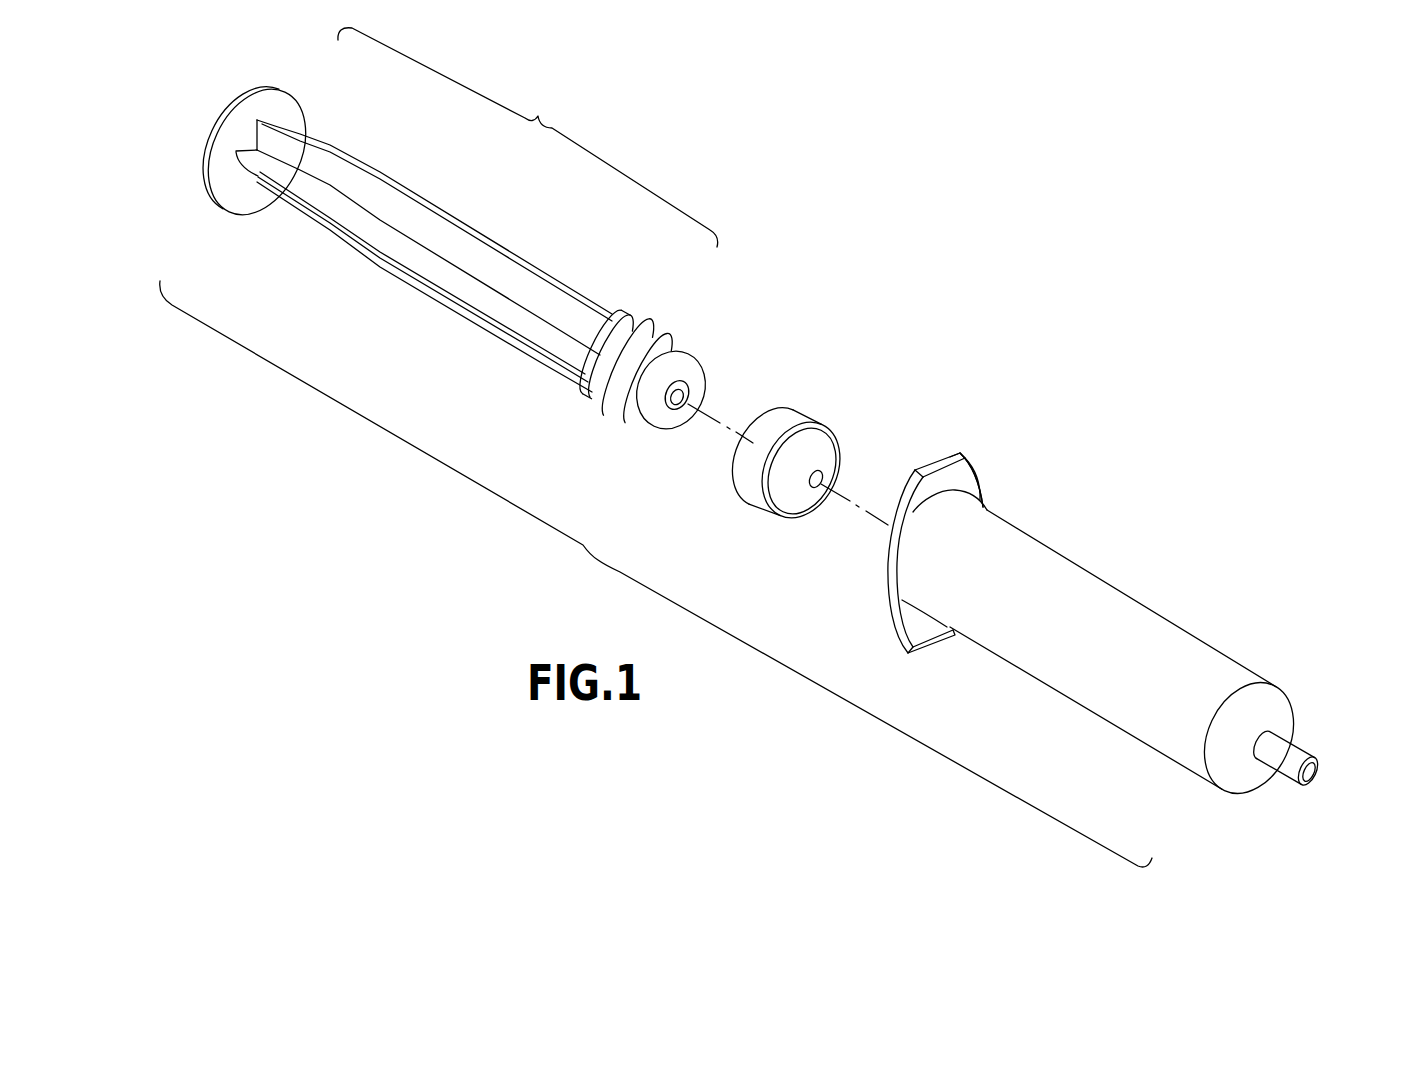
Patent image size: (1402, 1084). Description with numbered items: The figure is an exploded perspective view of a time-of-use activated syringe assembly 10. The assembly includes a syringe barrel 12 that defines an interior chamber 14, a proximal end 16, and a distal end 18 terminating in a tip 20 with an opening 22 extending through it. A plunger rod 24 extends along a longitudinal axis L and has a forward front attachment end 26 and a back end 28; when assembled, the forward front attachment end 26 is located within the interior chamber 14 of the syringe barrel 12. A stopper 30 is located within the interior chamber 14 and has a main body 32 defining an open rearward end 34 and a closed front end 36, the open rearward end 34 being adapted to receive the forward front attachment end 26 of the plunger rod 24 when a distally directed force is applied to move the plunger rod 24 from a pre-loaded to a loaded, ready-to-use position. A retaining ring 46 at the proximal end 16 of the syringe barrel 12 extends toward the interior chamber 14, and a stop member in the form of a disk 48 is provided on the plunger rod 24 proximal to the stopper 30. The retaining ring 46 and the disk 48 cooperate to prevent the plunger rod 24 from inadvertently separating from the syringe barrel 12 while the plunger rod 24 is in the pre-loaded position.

The syringe assembly 10 is at (597, 588).
The syringe barrel 12 is at (1128, 598).
The interior chamber 14 is at (888, 556).
The proximal end 16 is at (942, 595).
The distal end 18 is at (1268, 698).
The tip 20 is at (1302, 748).
The opening 22 is at (1313, 775).
The plunger rod 24 is at (380, 173).
The forward front attachment end 26 is at (633, 422).
The back end 28 is at (232, 136).
The stopper 30 is at (797, 410).
The main body 32 is at (840, 440).
The open rearward end 34 is at (763, 415).
The closed front end 36 is at (790, 497).
The retaining ring 46 is at (975, 497).
The disk 48 is at (600, 338).
The longitudinal axis L is at (528, 137).